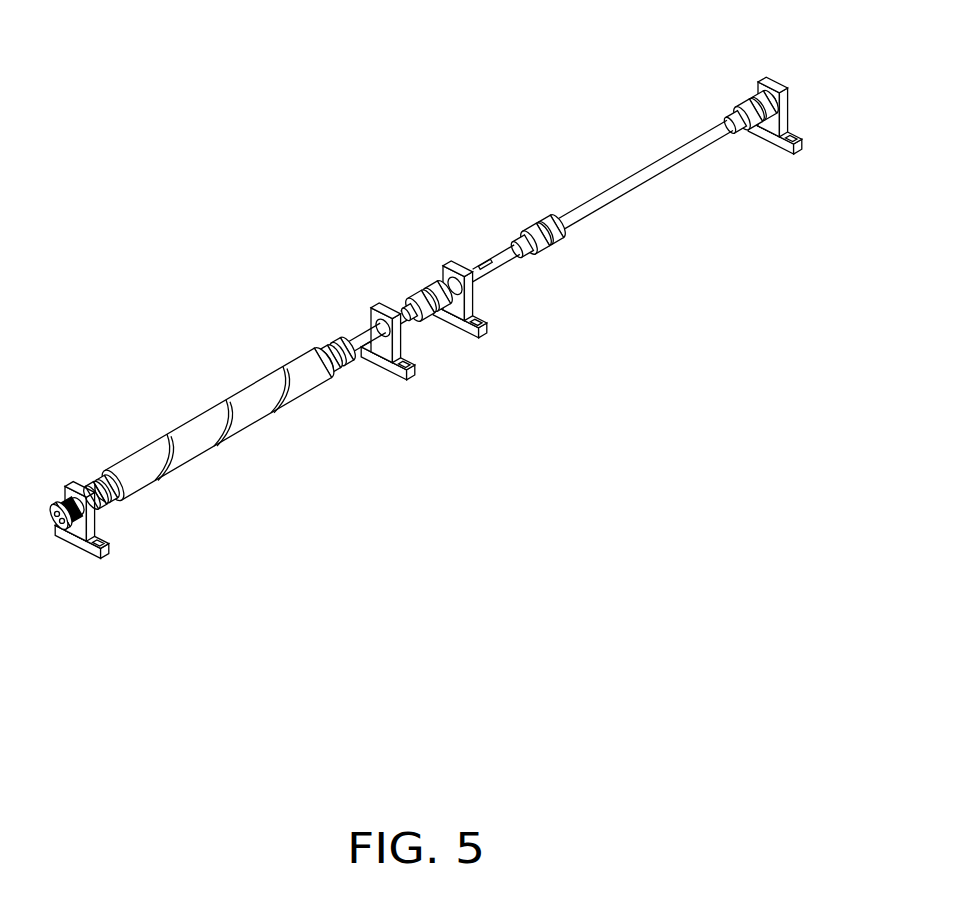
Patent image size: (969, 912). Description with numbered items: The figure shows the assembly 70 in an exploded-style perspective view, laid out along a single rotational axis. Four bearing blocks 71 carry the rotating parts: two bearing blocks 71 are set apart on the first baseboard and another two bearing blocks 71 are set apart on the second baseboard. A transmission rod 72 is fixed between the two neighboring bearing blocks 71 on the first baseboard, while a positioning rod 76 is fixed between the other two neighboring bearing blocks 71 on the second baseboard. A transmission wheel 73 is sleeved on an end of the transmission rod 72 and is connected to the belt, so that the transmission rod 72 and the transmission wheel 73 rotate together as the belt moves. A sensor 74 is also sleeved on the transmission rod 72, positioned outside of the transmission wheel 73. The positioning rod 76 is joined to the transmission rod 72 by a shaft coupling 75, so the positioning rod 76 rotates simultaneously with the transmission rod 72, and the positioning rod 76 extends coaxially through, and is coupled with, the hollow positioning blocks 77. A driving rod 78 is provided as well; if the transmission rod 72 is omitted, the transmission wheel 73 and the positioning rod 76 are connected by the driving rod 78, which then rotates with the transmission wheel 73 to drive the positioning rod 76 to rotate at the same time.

The roller assembly 70 is at (422, 292).
The bearing block 71 is at (774, 143).
The transmission rod 72 is at (356, 340).
The transmission wheel 73 is at (70, 482).
The sensor 74 is at (57, 503).
The shaft coupling 75 is at (424, 302).
The positioning rod 76 is at (626, 185).
The positioning block 77 is at (746, 104).
The driving rod 78 is at (195, 447).